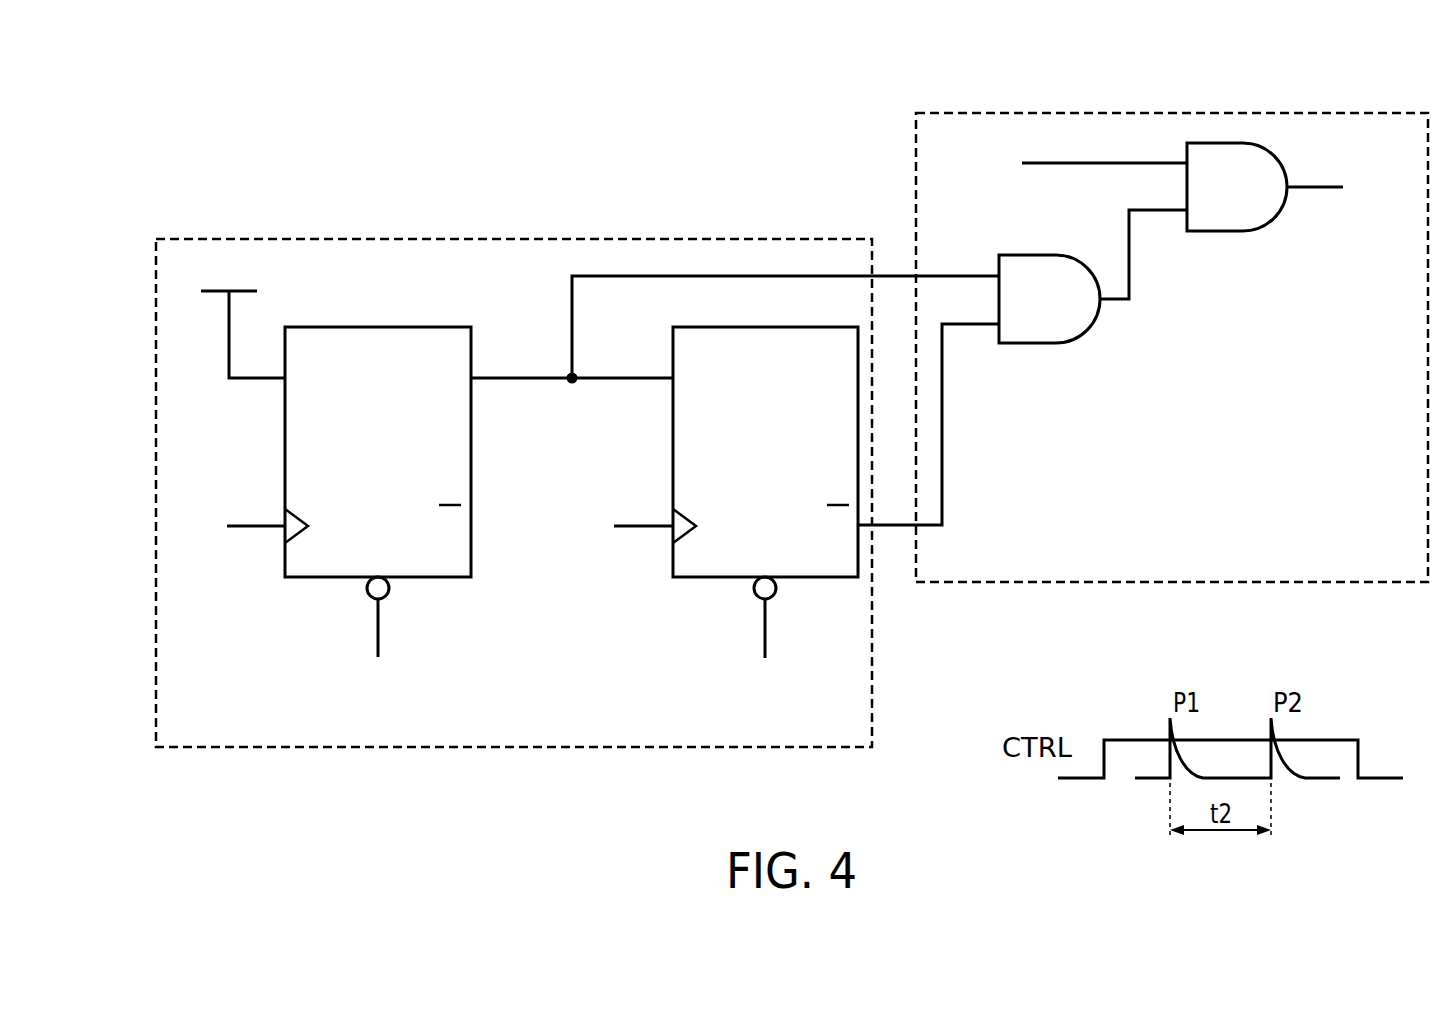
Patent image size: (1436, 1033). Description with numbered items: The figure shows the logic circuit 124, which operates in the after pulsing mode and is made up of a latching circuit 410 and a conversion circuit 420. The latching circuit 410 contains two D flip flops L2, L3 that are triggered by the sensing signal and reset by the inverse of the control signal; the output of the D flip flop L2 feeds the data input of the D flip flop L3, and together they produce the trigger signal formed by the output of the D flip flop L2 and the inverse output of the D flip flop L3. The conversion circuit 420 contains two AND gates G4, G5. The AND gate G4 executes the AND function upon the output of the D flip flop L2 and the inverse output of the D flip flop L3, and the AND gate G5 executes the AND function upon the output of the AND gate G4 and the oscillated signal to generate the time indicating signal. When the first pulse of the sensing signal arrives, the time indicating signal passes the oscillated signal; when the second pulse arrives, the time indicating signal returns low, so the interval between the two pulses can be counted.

The logic circuit 124 is at (158, 52).
The latching circuit 410 is at (517, 239).
The conversion circuit 420 is at (1172, 112).
The D flip flop L2 is at (438, 577).
The D flip flop L3 is at (693, 577).
The AND gate G4 is at (1027, 343).
The AND gate G5 is at (1212, 231).